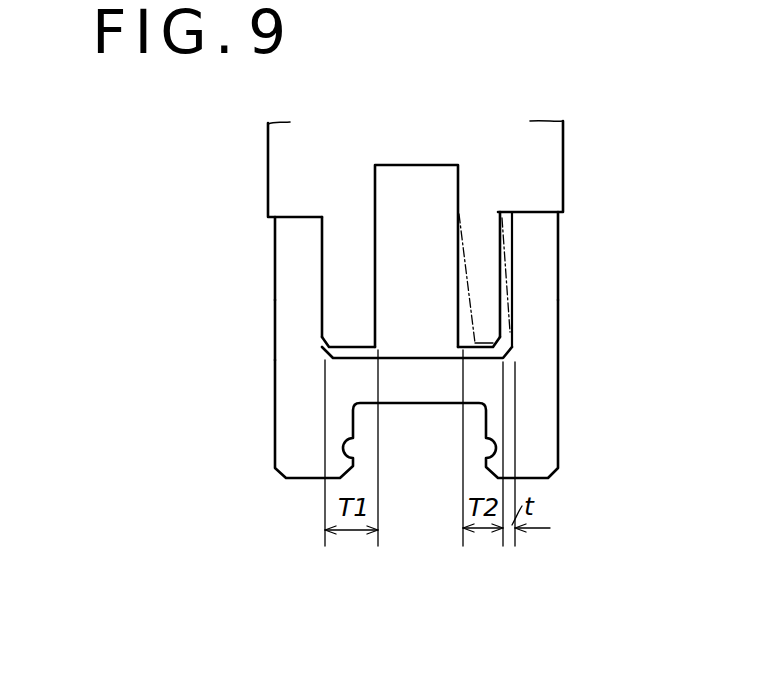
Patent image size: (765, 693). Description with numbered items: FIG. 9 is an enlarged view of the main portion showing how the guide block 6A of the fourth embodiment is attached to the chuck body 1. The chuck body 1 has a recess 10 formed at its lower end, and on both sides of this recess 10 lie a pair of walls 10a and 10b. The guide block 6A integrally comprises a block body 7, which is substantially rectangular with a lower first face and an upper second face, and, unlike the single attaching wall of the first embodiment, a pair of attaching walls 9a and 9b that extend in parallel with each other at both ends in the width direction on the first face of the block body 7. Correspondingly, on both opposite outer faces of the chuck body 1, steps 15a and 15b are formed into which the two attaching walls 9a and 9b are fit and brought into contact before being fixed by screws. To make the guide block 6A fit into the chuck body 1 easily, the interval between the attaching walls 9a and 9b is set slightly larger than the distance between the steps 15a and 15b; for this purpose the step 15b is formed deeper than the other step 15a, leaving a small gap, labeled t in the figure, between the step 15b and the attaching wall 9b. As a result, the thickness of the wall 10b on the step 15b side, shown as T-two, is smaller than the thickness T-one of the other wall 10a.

The chuck body 1 is at (566, 150).
The guide block 6A is at (277, 393).
The block body 7 is at (425, 378).
The attaching wall 9a is at (290, 240).
The attaching wall 9b is at (548, 236).
The recess 10 is at (423, 180).
The wall 10a is at (340, 325).
The wall 10b is at (490, 328).
The step 15a is at (322, 281).
The step 15b is at (500, 282).